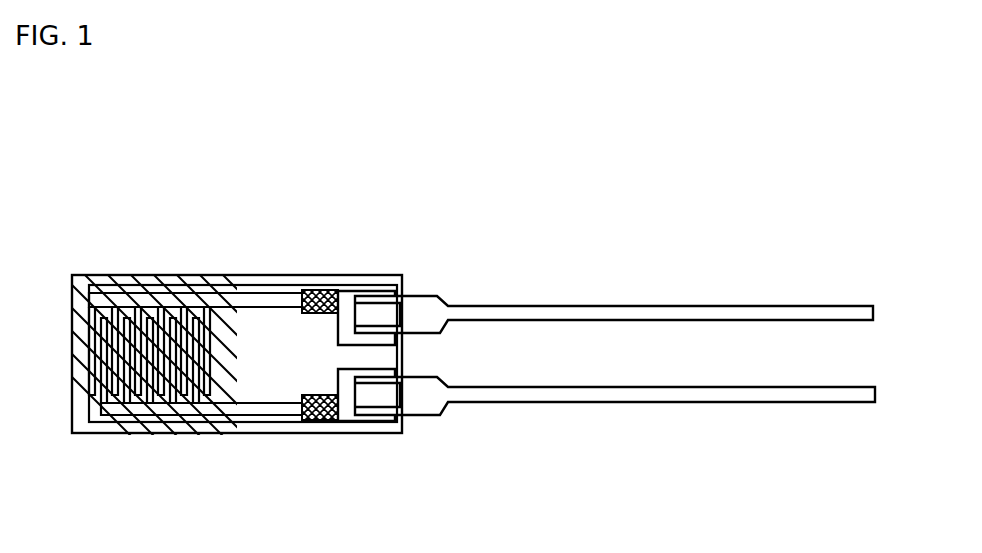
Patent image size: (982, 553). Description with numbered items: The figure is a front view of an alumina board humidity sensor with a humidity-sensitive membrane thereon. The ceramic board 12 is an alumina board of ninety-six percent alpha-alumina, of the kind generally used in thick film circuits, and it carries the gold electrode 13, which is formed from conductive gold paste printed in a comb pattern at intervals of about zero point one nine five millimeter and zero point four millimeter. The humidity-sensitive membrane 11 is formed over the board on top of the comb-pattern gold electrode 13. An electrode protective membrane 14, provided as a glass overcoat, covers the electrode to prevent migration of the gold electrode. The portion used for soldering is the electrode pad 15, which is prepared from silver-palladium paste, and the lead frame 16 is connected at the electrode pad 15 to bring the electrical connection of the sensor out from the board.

The humidity-sensitive membrane 11 is at (110, 280).
The ceramic board 12 is at (293, 353).
The gold electrode 13 is at (283, 303).
The electrode protective membrane 14 is at (323, 292).
The electrode pad 15 is at (365, 292).
The lead frame 16 is at (513, 308).